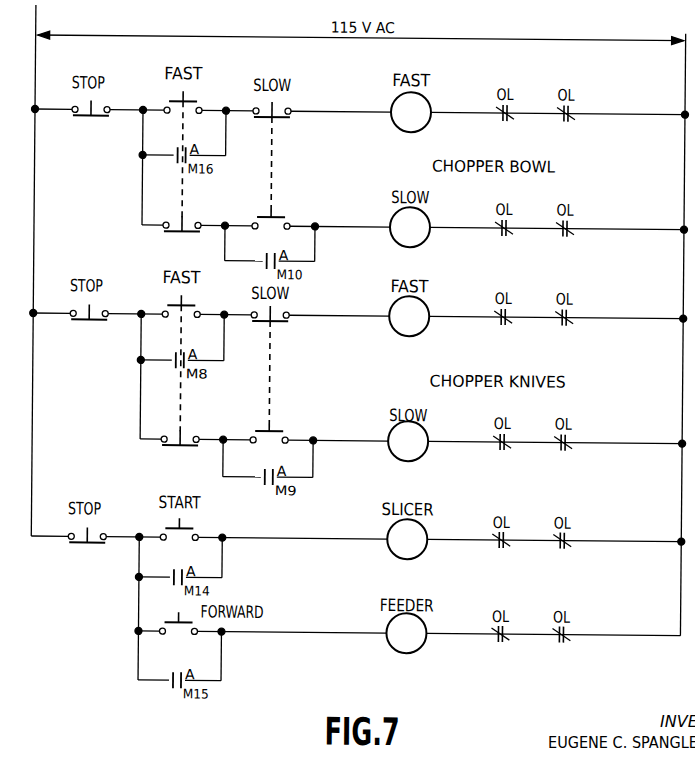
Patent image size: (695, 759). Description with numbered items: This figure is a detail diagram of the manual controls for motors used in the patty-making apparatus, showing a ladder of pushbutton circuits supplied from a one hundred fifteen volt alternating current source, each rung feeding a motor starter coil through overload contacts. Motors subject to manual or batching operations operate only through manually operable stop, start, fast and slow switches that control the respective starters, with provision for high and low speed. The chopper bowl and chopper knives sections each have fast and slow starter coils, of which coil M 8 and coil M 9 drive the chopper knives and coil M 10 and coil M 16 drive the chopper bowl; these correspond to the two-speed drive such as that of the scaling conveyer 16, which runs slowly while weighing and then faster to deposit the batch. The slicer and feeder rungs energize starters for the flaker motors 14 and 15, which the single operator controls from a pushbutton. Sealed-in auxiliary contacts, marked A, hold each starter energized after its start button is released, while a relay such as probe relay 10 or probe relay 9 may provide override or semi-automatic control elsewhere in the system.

The scaling conveyer 16 is at (411, 112).
The probe relay 10 is at (410, 227).
The motor starter coil M8 (chopper knives fast) 8 is at (409, 316).
The probe relay 9 is at (408, 441).
The motor 14 is at (407, 539).
The motor 15 is at (406, 633).